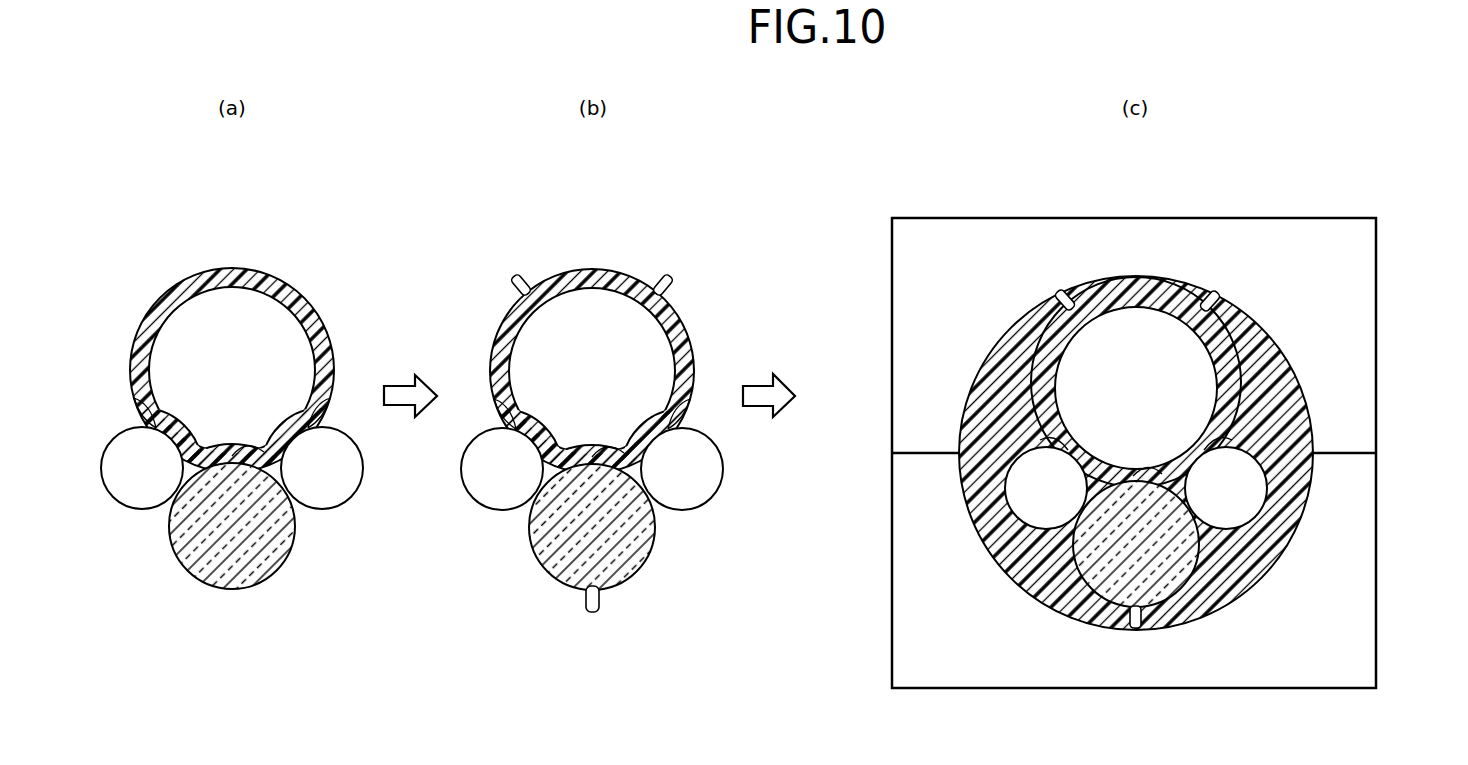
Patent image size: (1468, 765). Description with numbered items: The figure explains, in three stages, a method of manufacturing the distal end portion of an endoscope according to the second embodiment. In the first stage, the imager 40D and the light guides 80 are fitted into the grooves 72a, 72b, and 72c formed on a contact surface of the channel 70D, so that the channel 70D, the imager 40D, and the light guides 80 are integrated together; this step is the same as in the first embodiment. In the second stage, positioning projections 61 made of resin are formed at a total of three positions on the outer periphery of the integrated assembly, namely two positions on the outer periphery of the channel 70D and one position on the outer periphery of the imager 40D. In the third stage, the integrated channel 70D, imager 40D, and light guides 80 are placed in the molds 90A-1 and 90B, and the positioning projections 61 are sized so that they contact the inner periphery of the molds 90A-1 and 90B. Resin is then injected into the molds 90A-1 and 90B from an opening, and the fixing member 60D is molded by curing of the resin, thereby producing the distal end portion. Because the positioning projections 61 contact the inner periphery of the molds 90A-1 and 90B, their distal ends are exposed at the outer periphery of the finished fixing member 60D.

The channel 70D is at (288, 292).
The imager 40D is at (236, 577).
The light guides 80 is at (137, 497).
The positioning projections 61 is at (522, 275).
The groove 72a is at (135, 407).
The groove 72b is at (236, 450).
The groove 72c is at (328, 413).
The fixing member 60D is at (1233, 562).
The mold 90A-1 is at (937, 257).
The mold 90B is at (940, 643).